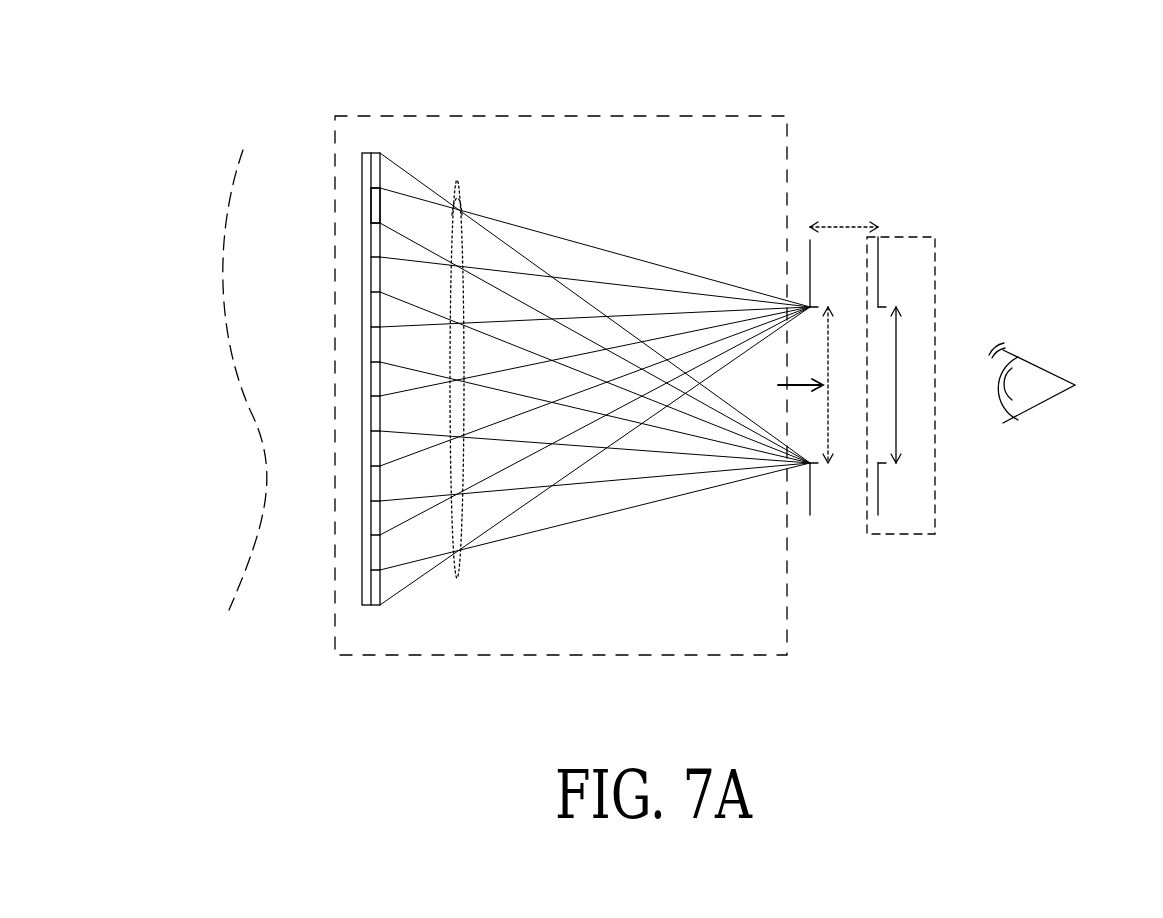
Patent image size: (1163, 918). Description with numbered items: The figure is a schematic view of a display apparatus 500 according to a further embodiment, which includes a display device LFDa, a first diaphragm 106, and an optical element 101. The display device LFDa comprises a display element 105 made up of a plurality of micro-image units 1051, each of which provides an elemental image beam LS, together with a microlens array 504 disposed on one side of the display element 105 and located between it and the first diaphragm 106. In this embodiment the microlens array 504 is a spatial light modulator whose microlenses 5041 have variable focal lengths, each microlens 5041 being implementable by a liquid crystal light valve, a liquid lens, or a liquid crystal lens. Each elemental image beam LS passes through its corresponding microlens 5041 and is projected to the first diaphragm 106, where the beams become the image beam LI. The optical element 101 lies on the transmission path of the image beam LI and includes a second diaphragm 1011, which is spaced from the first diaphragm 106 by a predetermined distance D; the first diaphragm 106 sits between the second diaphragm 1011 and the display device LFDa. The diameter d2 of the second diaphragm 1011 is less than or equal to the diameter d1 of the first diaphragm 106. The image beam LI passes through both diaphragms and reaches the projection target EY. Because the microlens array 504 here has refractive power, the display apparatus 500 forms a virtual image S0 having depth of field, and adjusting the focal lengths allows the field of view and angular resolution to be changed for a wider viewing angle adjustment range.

The display apparatus 500 is at (1134, 700).
The display element 105 is at (360, 175).
The micro-image unit 1051 is at (375, 210).
The microlens array 504 is at (457, 172).
The microlens 5041 is at (462, 200).
The first diaphragm 106 is at (818, 515).
The optical element 101 is at (935, 268).
The second diaphragm 1011 is at (886, 520).
The display device LFDa is at (713, 116).
The elemental image beam LS is at (630, 252).
The image beam LI is at (778, 384).
The virtual image S0 is at (247, 150).
The predetermined distance D is at (844, 203).
The diameter of the first diaphragm d1 is at (849, 385).
The diameter of the second diaphragm d2 is at (915, 385).
The projection target EY is at (1032, 390).